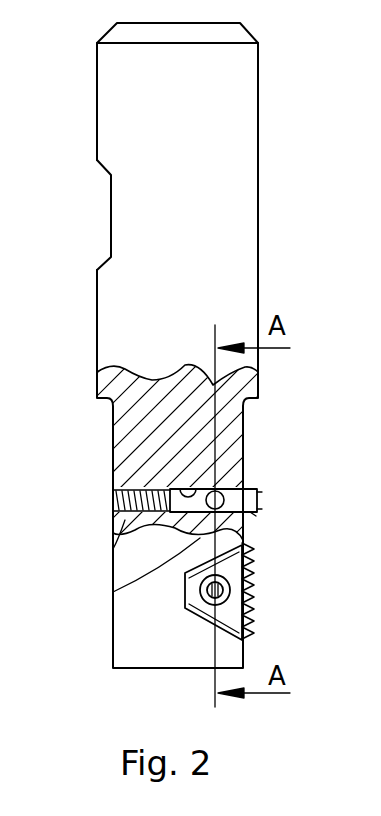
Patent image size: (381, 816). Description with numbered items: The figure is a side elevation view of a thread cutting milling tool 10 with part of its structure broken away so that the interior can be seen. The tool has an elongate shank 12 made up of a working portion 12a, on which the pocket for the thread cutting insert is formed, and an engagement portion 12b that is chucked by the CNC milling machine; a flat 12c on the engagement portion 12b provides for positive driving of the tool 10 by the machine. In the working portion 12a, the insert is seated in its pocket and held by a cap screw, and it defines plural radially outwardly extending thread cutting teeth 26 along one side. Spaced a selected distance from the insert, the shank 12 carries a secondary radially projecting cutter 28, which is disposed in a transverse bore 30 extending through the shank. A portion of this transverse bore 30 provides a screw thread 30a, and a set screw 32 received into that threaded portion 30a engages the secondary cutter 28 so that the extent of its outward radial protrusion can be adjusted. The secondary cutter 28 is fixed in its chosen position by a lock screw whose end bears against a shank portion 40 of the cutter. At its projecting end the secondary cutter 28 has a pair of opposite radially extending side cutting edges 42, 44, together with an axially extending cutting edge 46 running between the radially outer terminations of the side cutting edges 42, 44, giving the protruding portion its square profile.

The thread cutting milling tool 10 is at (283, 208).
The elongate shank 12 is at (204, 262).
The working portion 12a is at (246, 451).
The engagement portion 12b is at (258, 128).
The flat 12c is at (110, 221).
The thread cutting teeth 26 is at (258, 610).
The secondary radially projecting cutter 28 is at (258, 500).
The transverse bore 30 is at (197, 487).
The screw thread of transverse bore 30a is at (113, 549).
The set screw 32 is at (113, 492).
The shank portion of secondary cutter 40 is at (113, 592).
The side cutting edge 42 is at (252, 514).
The side cutting edge 44 is at (250, 484).
The axially extending cutting edge 46 is at (258, 506).